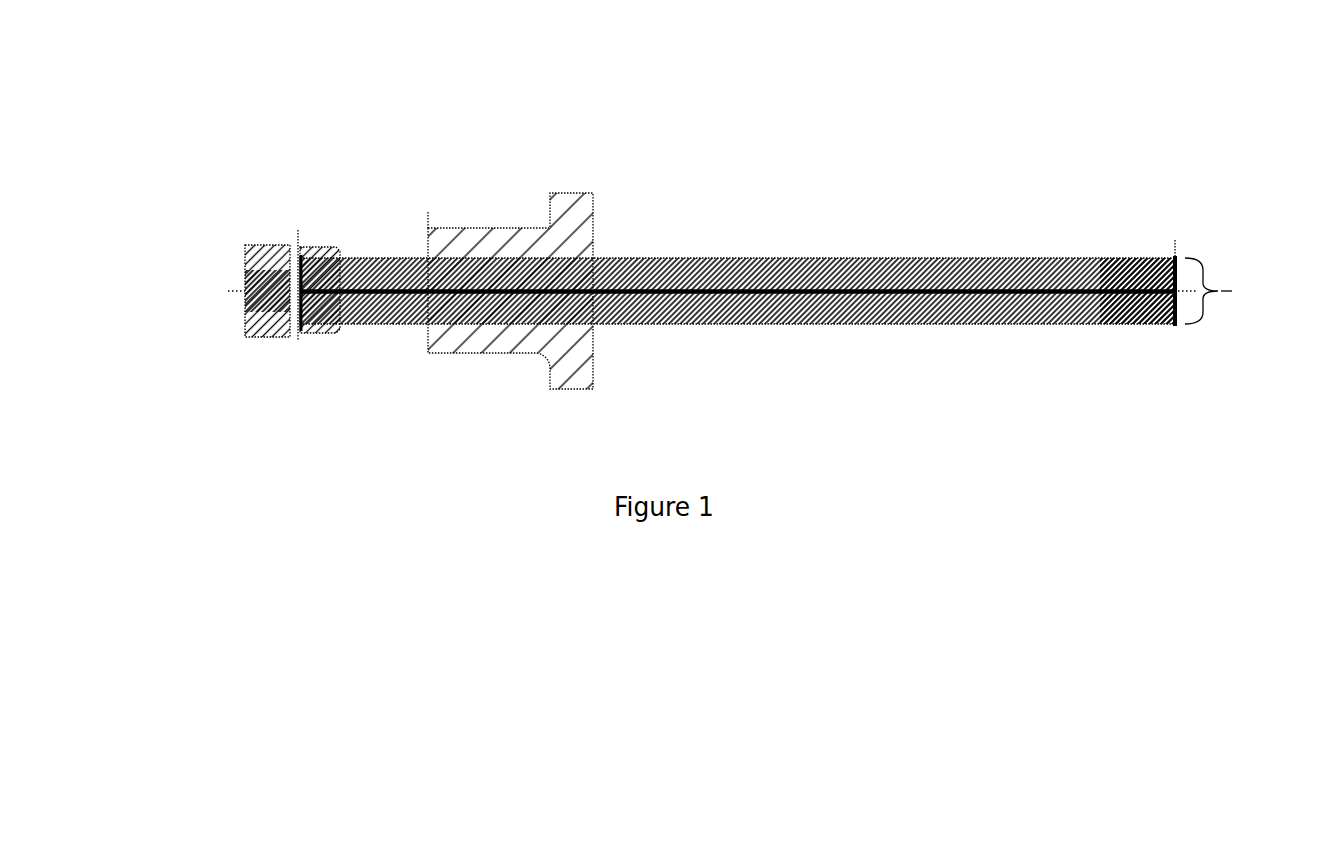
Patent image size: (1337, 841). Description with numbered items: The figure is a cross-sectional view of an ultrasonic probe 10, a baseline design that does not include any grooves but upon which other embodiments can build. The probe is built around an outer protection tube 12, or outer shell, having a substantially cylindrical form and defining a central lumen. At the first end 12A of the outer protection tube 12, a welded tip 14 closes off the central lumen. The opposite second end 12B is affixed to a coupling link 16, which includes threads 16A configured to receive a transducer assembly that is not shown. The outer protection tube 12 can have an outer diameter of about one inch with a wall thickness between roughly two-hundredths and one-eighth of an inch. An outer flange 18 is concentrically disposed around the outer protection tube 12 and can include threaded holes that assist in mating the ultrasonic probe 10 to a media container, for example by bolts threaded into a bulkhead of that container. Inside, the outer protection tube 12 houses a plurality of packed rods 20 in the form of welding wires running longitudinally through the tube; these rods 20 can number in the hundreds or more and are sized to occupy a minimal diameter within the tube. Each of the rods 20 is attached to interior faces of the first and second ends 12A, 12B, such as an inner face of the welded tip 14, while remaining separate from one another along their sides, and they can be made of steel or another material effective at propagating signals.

The ultrasonic probe 10 is at (1040, 109).
The outer protection tube 12 is at (763, 297).
The first end 12A is at (1155, 326).
The second end 12B is at (312, 263).
The welded tip 14 is at (1176, 326).
The coupling link 16 is at (234, 299).
The threads 16A is at (266, 313).
The outer flange 18 is at (579, 196).
The packed rods 20 is at (901, 297).